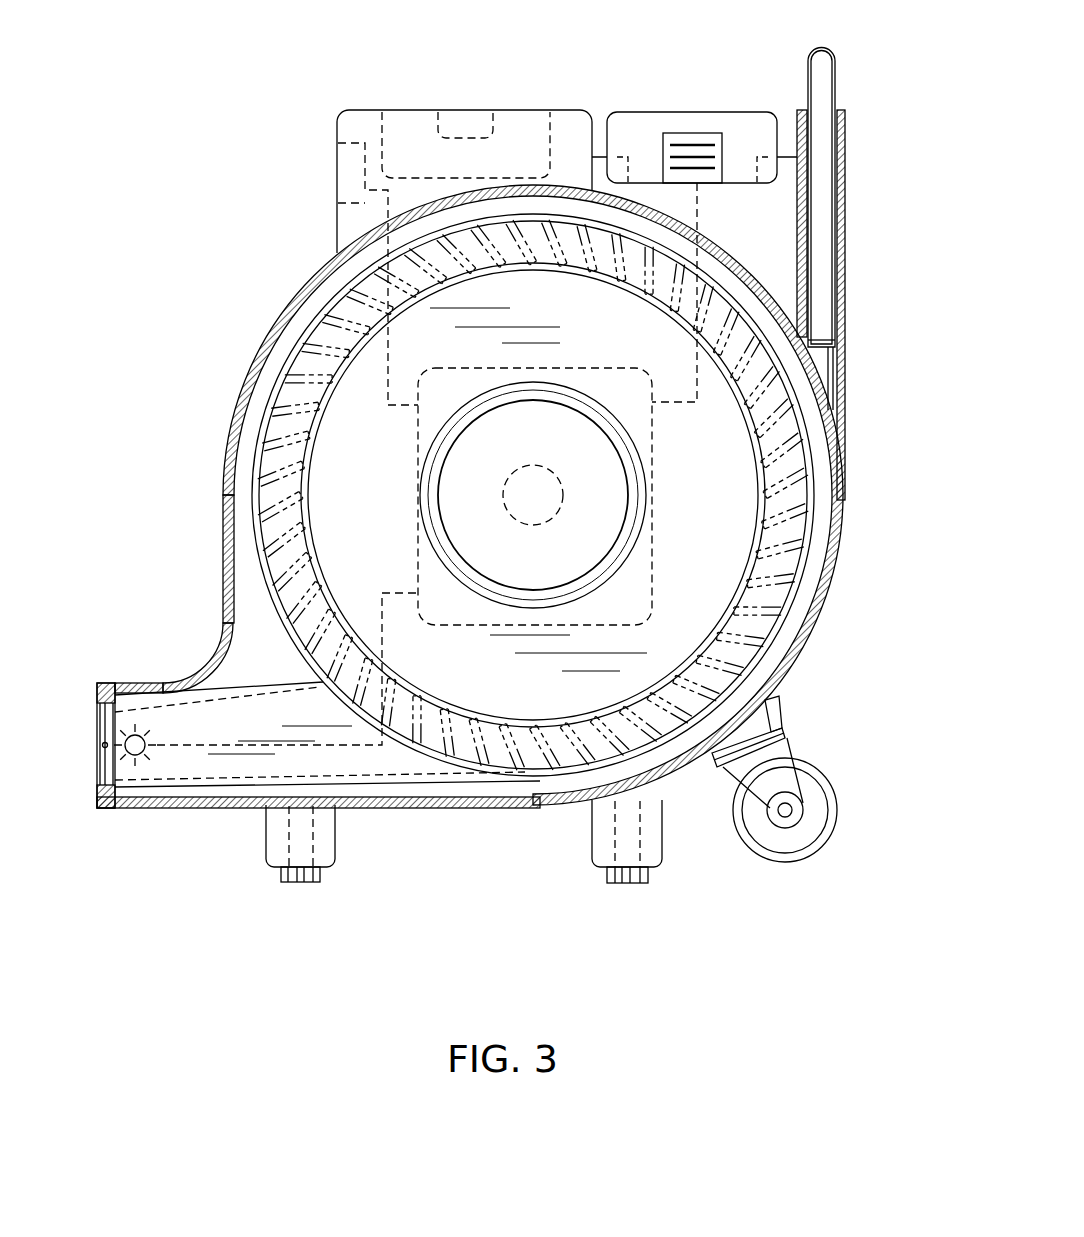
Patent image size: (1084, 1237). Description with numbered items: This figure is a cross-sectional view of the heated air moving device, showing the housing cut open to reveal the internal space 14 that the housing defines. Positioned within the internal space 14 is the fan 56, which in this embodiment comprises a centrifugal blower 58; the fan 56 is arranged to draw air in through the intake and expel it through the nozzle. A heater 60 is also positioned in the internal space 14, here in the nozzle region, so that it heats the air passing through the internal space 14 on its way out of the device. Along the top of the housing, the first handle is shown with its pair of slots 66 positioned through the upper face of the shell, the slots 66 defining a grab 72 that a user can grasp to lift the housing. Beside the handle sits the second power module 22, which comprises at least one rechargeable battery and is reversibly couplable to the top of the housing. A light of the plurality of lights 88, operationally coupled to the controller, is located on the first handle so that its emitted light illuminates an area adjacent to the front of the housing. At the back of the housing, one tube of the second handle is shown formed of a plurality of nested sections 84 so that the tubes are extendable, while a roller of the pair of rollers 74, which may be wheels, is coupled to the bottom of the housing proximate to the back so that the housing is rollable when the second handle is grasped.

The internal space 14 is at (717, 453).
The second power module 22 is at (683, 122).
The fan 56 is at (453, 488).
The centrifugal blower 58 is at (517, 422).
The heater 60 is at (137, 727).
The slots 66 is at (527, 112).
The grab 72 is at (460, 127).
The rollers 74 is at (830, 783).
The nested sections 84 is at (823, 207).
The lights 88 is at (343, 172).